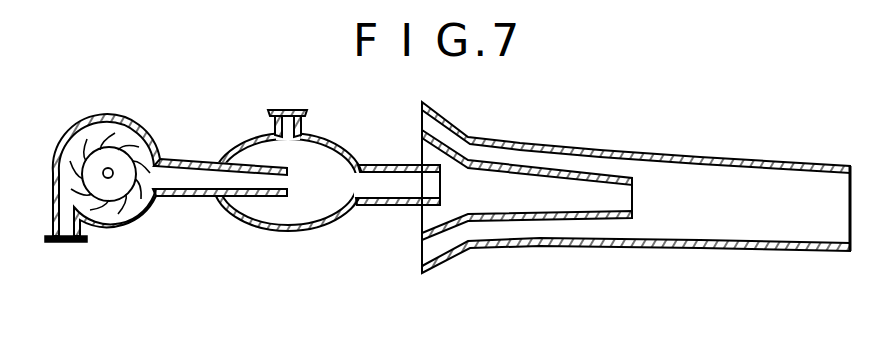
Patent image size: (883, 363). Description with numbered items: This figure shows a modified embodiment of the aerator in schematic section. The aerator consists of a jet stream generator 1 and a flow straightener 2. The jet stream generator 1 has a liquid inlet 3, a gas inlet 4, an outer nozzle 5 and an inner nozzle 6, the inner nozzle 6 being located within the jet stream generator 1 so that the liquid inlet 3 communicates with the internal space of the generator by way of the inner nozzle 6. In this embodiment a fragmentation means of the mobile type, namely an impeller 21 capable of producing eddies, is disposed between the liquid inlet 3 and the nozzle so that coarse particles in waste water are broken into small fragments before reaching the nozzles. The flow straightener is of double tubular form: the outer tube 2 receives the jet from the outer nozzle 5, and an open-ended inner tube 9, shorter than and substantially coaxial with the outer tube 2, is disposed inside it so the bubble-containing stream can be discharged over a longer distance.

The jet stream generator 1 is at (308, 229).
The flow straightener 2 is at (688, 244).
The liquid inlet 3 is at (67, 236).
The gas inlet 4 is at (291, 128).
The outer nozzle 5 is at (425, 189).
The inner nozzle 6 is at (272, 183).
The inner tube 9 is at (570, 168).
The impeller 21 is at (127, 157).